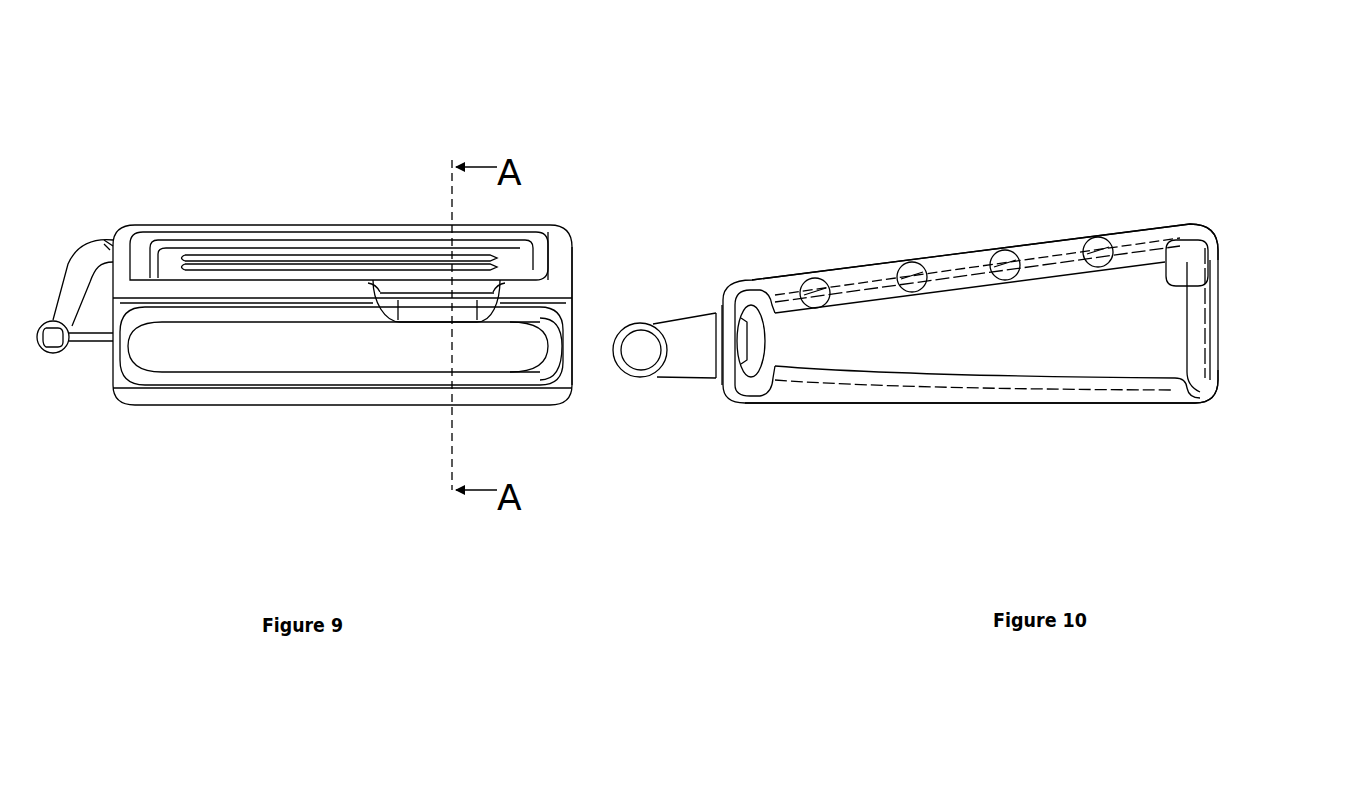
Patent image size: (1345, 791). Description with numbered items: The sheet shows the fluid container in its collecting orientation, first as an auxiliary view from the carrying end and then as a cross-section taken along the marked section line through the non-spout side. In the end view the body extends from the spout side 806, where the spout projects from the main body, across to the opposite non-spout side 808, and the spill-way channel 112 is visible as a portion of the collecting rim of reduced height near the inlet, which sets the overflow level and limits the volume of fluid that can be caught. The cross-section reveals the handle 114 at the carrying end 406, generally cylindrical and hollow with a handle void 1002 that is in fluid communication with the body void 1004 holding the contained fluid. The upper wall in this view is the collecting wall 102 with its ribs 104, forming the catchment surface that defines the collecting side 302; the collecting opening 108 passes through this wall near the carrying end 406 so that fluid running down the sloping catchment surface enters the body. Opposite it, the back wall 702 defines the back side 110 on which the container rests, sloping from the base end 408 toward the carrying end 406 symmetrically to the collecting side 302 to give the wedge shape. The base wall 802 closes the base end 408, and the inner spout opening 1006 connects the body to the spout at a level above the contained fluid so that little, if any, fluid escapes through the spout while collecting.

In FIG. 9, the spout side 806 is at (48, 225).
In FIG. 9, the non-spout side 808 is at (589, 188).
In FIG. 9, the spill-way channel 112 is at (428, 312).
In FIG. 10, the handle 114 is at (637, 322).
In FIG. 10, the handle void 1002 is at (641, 360).
In FIG. 10, the carrying end 406 is at (675, 449).
In FIG. 10, the collecting opening 108 is at (855, 298).
In FIG. 10, the collecting wall 102 is at (948, 270).
In FIG. 10, the ribs 104 is at (905, 297).
In FIG. 10, the inner spout opening 1006 is at (1178, 252).
In FIG. 10, the collecting side 302 is at (1225, 198).
In FIG. 10, the base wall 802 is at (1192, 310).
In FIG. 10, the body void 1004 is at (1080, 347).
In FIG. 10, the back wall 702 is at (940, 385).
In FIG. 10, the back side 110 is at (1225, 365).
In FIG. 10, the base end 408 is at (1177, 487).